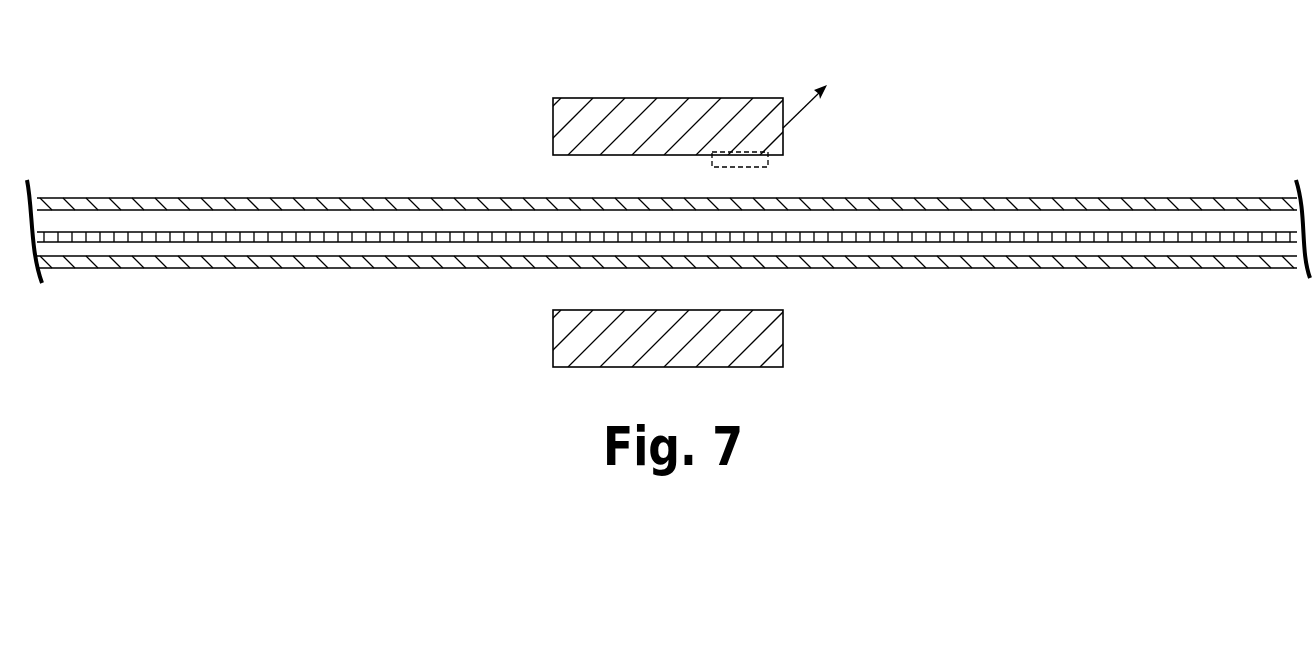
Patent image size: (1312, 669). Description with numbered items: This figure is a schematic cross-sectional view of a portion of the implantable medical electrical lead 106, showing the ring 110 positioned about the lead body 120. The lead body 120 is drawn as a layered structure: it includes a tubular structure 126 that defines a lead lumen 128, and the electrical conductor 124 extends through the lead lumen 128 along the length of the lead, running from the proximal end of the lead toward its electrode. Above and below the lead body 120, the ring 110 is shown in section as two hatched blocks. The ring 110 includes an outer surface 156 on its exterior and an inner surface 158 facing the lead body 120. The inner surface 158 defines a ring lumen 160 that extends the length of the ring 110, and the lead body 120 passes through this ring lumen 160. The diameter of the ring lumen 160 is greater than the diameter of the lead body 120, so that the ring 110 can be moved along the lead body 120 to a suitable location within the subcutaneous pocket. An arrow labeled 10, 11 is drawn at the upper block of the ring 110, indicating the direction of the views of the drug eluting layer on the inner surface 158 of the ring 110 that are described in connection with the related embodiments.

The implantable medical electrical lead 106 is at (667, 237).
The electrical conductor 124 is at (272, 232).
The tubular structure 126 is at (1160, 198).
The lead lumen 128 is at (1072, 245).
The lead body 120 is at (1197, 269).
The ring 110 is at (662, 97).
The outer surface 156 is at (642, 97).
The inner surface 158 is at (567, 154).
The direction 10 is at (820, 89).
The direction 11 is at (820, 89).
The ring lumen 160 is at (577, 293).